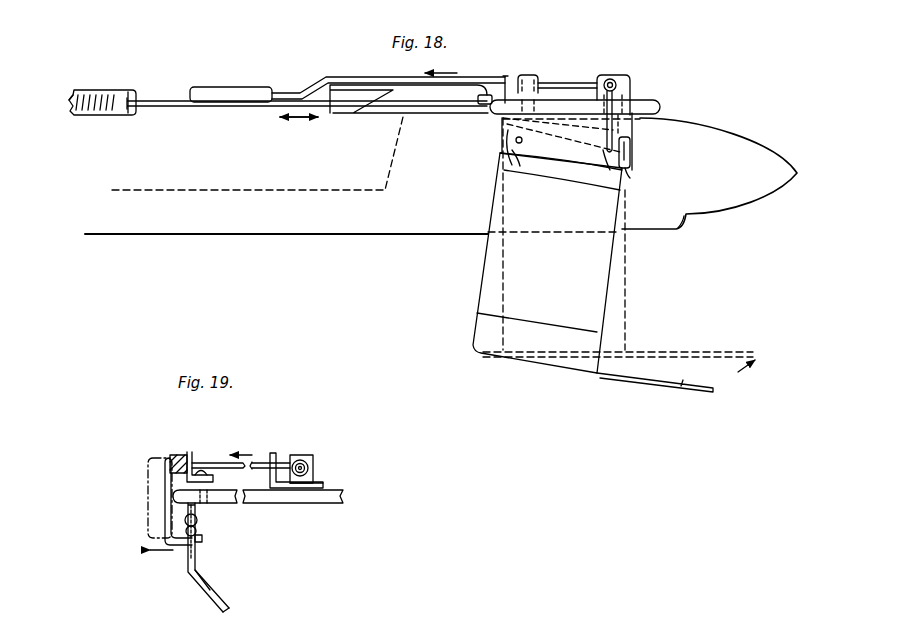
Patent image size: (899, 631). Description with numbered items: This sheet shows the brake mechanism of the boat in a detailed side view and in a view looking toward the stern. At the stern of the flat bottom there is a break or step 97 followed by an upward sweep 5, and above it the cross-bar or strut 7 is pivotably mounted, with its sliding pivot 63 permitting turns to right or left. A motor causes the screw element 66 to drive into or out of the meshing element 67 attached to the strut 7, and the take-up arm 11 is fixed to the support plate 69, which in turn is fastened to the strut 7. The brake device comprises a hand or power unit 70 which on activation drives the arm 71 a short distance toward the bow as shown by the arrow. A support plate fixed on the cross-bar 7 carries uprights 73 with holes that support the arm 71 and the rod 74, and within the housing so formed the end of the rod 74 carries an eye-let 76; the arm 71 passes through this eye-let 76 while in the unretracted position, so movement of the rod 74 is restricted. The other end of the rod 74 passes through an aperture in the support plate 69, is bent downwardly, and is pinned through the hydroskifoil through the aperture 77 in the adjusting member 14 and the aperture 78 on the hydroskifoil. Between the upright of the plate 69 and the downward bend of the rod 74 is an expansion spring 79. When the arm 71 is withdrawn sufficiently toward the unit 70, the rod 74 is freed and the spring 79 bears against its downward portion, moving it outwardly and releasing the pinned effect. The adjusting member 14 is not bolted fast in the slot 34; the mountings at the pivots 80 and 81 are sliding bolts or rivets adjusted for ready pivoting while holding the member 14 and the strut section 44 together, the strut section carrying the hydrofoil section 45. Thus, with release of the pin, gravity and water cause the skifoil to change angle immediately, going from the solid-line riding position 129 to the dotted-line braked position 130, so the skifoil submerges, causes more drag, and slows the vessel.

In FIG. 18, the upward sweep 5 is at (745, 206).
In FIG. 18, the cross-bar or strut 7 is at (662, 106).
In FIG. 19, the cross-bar or strut 7 is at (343, 500).
In FIG. 18, the arm 11 is at (151, 108).
In FIG. 18, the adjusting member 14 is at (503, 136).
In FIG. 19, the adjusting member 14 is at (187, 568).
In FIG. 18, the slot 34 is at (630, 165).
In FIG. 19, the strut section 44 is at (203, 577).
In FIG. 19, the hydrofoil section 45 is at (229, 606).
In FIG. 18, the sliding pivot 63 is at (634, 117).
In FIG. 18, the screw element 66 is at (72, 108).
In FIG. 18, the meshing element 67 is at (104, 90).
In FIG. 18, the support plate 69 is at (485, 104).
In FIG. 19, the support plate 69 is at (190, 452).
In FIG. 18, the hand or power unit 70 is at (245, 87).
In FIG. 18, the arm 71 is at (350, 78).
In FIG. 19, the arm 71 is at (309, 462).
In FIG. 19, the upright 73 is at (292, 456).
In FIG. 19, the rod 74 is at (214, 462).
In FIG. 19, the eye-let 76 is at (320, 480).
In FIG. 18, the aperture 77 is at (606, 165).
In FIG. 19, the aperture 78 is at (203, 541).
In FIG. 19, the expansion spring 79 is at (176, 455).
In FIG. 18, the pivot 80 is at (511, 158).
In FIG. 19, the pivot 80 is at (204, 520).
In FIG. 18, the pivot 81 is at (631, 156).
In FIG. 19, the pivot 81 is at (203, 531).
In FIG. 18, the break or steps 97 is at (684, 218).
In FIG. 18, the riding position 129 is at (678, 393).
In FIG. 18, the braked position 130 is at (698, 350).